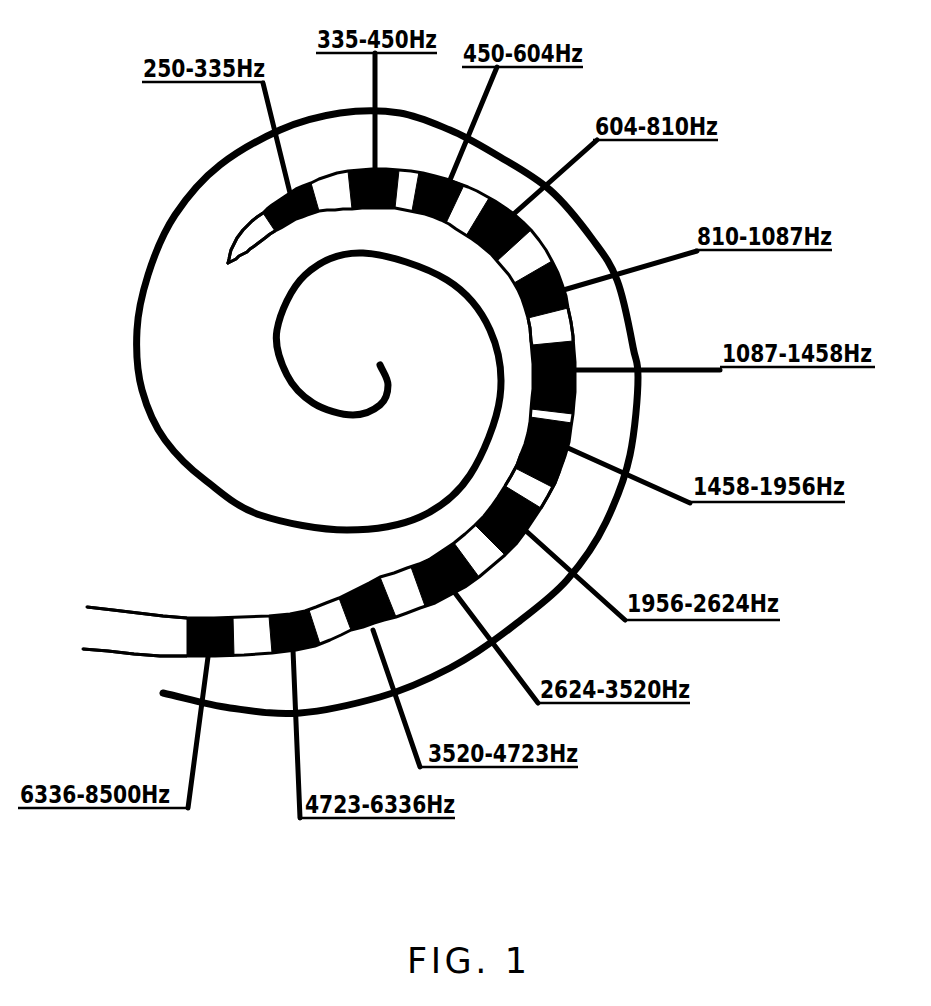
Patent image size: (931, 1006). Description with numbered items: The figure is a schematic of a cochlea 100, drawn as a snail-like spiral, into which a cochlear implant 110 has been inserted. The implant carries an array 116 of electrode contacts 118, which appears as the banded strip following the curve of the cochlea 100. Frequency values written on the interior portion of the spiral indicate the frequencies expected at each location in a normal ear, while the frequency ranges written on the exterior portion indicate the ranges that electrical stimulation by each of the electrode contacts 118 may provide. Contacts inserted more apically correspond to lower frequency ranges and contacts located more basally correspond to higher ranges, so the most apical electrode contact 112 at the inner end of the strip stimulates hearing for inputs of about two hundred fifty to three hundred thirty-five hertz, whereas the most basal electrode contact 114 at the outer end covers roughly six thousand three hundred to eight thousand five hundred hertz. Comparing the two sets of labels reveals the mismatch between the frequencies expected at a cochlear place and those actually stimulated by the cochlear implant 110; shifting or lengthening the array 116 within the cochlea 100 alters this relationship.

The cochlea 100 is at (520, 163).
The cochlear implant 110 is at (518, 267).
The most apical electrode contact 112 is at (283, 193).
The most basal electrode contact 114 is at (187, 647).
The array of electrode contacts 116 is at (532, 489).
The electrode contacts 118 is at (577, 340).